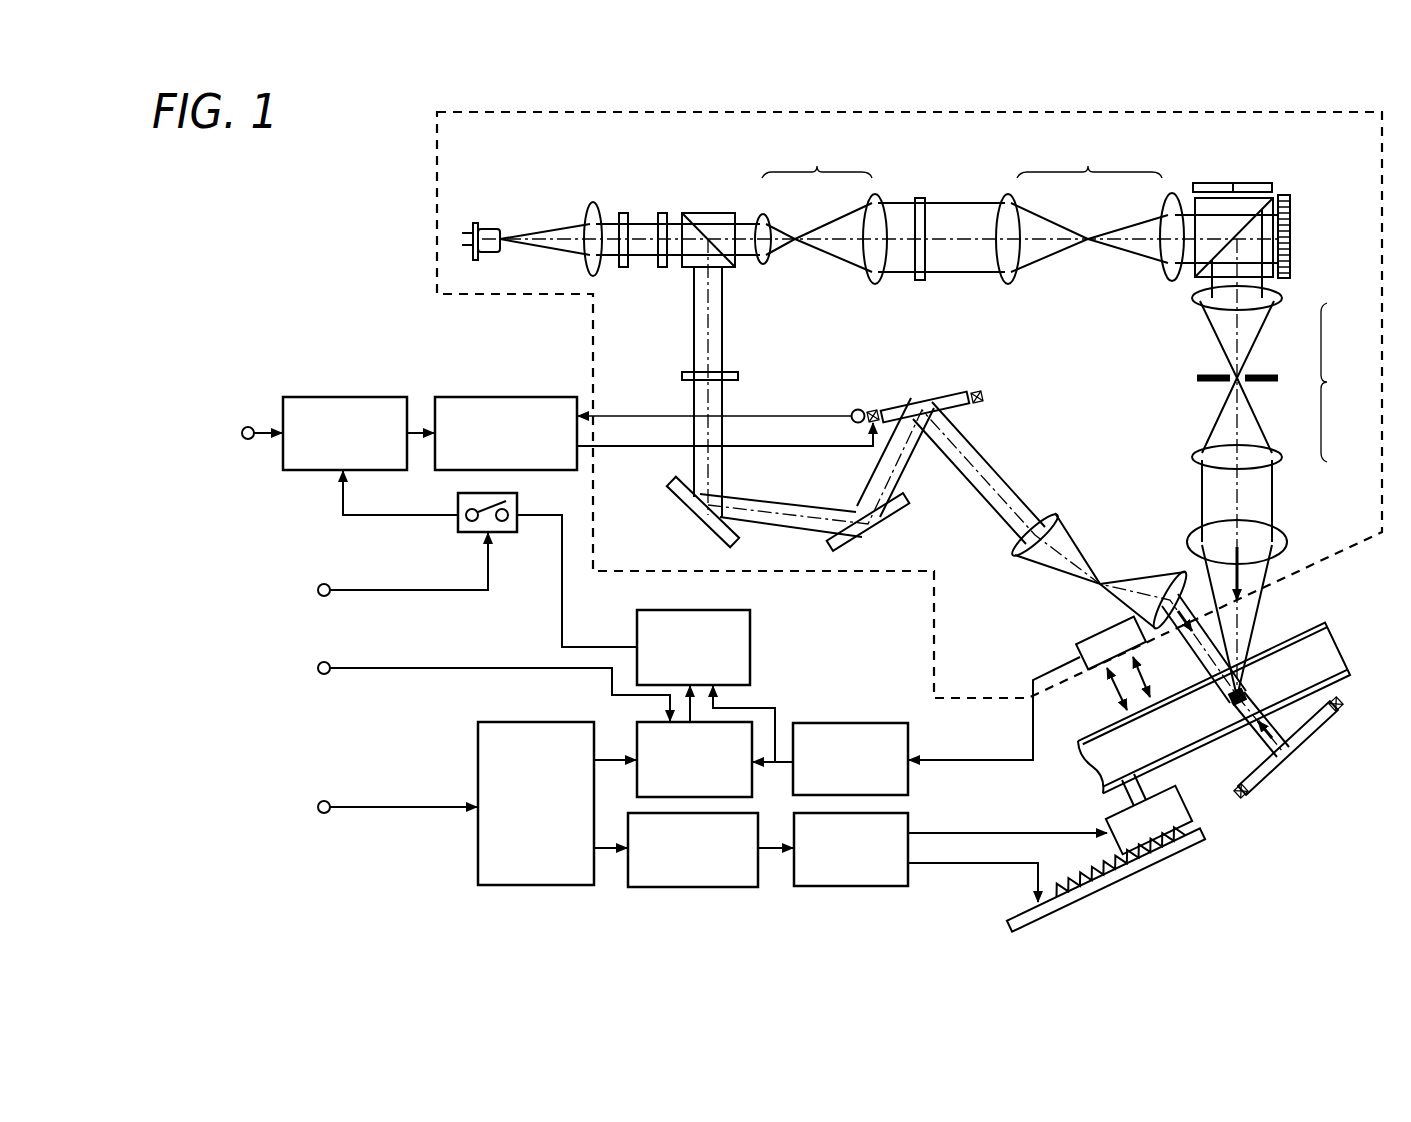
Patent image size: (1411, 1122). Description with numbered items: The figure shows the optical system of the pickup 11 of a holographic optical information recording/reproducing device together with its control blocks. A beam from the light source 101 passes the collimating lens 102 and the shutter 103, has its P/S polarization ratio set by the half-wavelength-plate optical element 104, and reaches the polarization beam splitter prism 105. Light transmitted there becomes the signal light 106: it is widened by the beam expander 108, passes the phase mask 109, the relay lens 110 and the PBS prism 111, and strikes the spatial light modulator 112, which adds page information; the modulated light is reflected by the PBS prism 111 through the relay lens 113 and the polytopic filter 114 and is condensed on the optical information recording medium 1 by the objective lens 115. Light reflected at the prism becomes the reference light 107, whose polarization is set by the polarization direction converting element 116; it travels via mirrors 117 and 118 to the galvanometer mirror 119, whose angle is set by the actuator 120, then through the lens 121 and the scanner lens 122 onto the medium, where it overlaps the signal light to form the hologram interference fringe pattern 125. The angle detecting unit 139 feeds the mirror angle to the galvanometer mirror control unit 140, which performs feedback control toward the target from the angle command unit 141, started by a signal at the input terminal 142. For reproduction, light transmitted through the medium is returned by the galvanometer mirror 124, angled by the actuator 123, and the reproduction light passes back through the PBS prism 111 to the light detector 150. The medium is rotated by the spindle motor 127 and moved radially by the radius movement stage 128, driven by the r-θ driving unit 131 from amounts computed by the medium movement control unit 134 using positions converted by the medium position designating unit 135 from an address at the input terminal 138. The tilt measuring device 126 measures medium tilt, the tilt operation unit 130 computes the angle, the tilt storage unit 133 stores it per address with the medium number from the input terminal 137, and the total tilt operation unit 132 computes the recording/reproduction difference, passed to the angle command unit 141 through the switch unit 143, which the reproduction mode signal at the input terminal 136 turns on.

The optical information recording medium 1 is at (1335, 640).
The pickup 11 is at (437, 155).
The light source 101 is at (492, 228).
The collimating lens 102 is at (594, 205).
The shutter 103 is at (623, 213).
The optical element 104 is at (662, 213).
The polarization beam splitter prism 105 is at (683, 263).
The signal light 106 is at (960, 204).
The reference light 107 is at (723, 312).
The beam expander 108 is at (824, 213).
The phase mask 109 is at (917, 198).
The relay lens 110 is at (1090, 213).
The PBS prism 111 is at (1200, 280).
The spatial light modulator 112 is at (1292, 245).
The relay lens 113 is at (1282, 414).
The polytopic filter 114 is at (1215, 385).
The objective lens 115 is at (1285, 547).
The polarization direction converting element 116 is at (682, 376).
The mirror 117 is at (697, 517).
The mirror 118 is at (905, 503).
The galvanometer mirror 119 is at (950, 398).
The actuator 120 is at (982, 395).
The lens 121 is at (1048, 525).
The scanner lens 122 is at (1160, 590).
The actuator 123 is at (1345, 705).
The galvanometer mirror 124 is at (1305, 750).
The interference fringe pattern 125 is at (1250, 693).
The tilt measuring device 126 is at (1075, 645).
The spindle motor 127 is at (1190, 805).
The radius movement stage 128 is at (1175, 855).
The tilt operation unit 130 is at (910, 745).
The r-θ driving unit 131 is at (910, 835).
The total tilt operation unit 132 is at (752, 636).
The tilt storage unit 133 is at (637, 733).
The medium movement control unit 134 is at (628, 822).
The medium position designating unit 135 is at (478, 745).
The input terminal 136 is at (318, 585).
The input terminal 137 is at (318, 663).
The input terminal 138 is at (318, 800).
The angle detecting unit 139 is at (855, 410).
The galvanometer mirror control unit 140 is at (457, 397).
The angle command unit 141 is at (305, 397).
The input terminal 142 is at (248, 440).
The switch unit 143 is at (458, 505).
The light detector 150 is at (1265, 183).